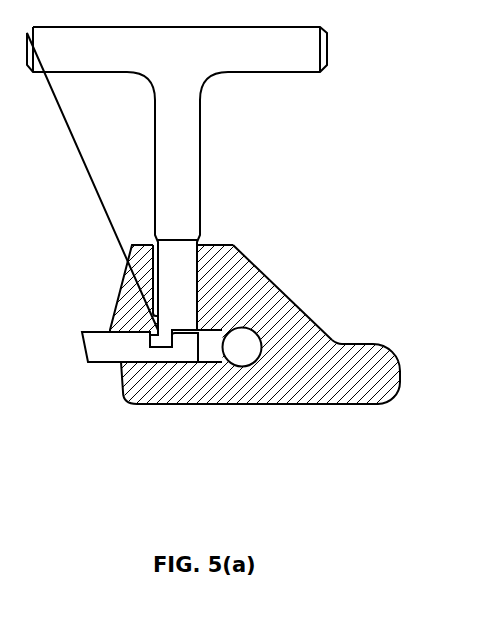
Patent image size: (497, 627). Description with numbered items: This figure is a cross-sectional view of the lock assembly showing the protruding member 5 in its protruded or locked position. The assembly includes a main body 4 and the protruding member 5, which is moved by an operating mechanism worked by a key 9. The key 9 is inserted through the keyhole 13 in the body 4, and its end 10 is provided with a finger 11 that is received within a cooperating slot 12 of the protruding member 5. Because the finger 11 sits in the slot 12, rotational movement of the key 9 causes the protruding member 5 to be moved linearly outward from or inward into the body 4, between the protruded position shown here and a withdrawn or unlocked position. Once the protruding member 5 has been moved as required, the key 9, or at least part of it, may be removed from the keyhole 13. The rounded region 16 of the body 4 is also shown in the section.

The main body 4 is at (278, 301).
The protruding member 5 is at (108, 347).
The key 9 is at (185, 148).
The end of the key 10 is at (235, 244).
The finger 11 is at (149, 348).
The slot 12 is at (171, 350).
The keyhole 13 is at (151, 234).
The rounded base end 16 is at (387, 367).